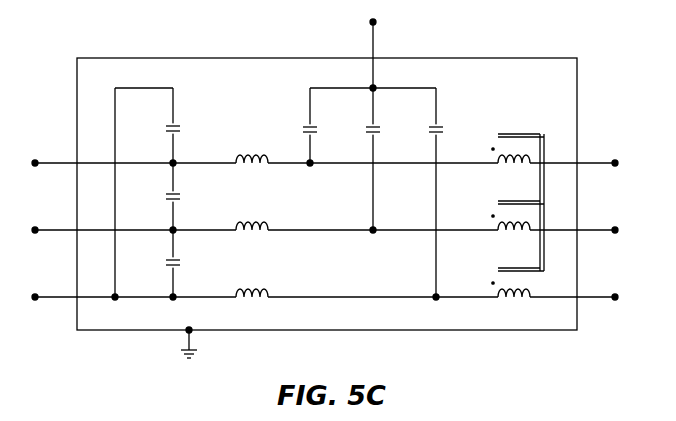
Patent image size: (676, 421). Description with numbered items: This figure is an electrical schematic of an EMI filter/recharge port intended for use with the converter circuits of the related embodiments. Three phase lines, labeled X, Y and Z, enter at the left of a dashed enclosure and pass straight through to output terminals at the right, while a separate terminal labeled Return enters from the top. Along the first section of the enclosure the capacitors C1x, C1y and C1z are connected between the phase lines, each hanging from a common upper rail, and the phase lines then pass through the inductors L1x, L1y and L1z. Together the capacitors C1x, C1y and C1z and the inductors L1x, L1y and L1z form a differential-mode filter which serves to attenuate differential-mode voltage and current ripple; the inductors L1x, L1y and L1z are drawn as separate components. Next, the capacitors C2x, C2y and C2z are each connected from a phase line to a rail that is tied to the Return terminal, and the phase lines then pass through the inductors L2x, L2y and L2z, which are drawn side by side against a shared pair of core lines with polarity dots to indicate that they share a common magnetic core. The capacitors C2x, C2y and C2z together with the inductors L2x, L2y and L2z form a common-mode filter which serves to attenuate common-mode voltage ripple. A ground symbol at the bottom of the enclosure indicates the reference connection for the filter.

The X input terminal X is at (20, 163).
The Y input terminal Y is at (19, 230).
The Z input terminal Z is at (20, 297).
The return terminal Return is at (405, 121).
The capacitor C1x is at (189, 130).
The capacitor C1y is at (189, 198).
The capacitor C1z is at (188, 264).
The inductor L1x is at (252, 142).
The inductor L1y is at (252, 209).
The inductor L1z is at (252, 276).
The capacitor C2x is at (326, 131).
The capacitor C2y is at (389, 131).
The capacitor C2z is at (451, 131).
The inductor L2x is at (518, 137).
The inductor L2y is at (518, 204).
The inductor L2z is at (518, 271).